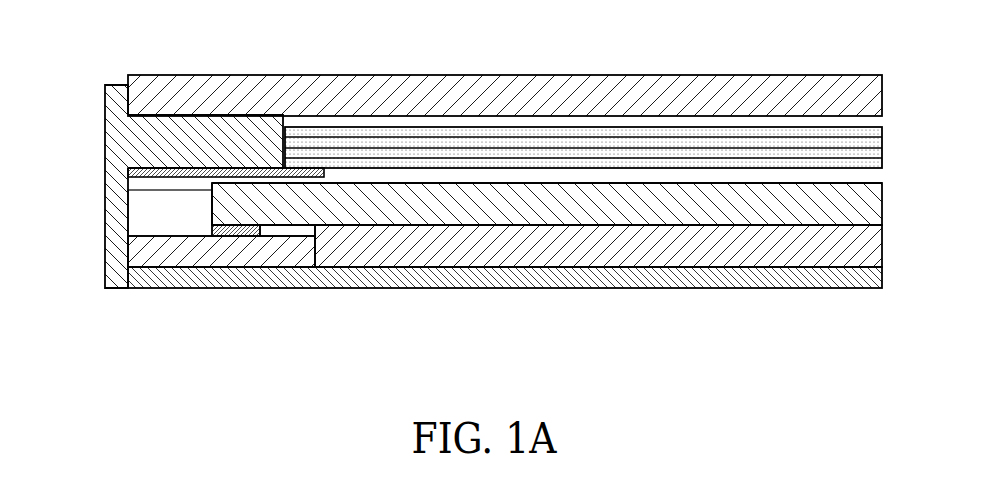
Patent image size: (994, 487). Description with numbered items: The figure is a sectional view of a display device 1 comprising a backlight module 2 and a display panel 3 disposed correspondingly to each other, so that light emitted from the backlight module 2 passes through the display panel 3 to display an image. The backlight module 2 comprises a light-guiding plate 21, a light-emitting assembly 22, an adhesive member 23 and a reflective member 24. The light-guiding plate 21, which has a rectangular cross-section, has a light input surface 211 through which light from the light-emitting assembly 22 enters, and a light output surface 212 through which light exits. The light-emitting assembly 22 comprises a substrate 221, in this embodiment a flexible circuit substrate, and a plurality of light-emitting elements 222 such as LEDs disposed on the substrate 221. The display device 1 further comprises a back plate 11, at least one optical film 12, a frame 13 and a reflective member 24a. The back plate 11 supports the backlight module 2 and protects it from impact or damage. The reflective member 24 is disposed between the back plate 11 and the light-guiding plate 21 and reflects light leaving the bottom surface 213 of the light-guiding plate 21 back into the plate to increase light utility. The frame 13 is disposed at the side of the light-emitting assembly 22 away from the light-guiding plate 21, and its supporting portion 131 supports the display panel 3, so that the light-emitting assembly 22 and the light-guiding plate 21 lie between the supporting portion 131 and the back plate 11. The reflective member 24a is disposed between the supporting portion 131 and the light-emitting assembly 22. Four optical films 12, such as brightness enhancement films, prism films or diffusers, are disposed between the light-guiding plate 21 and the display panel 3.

The display device 1 is at (190, 46).
The display panel 3 is at (868, 97).
The frame 13 is at (178, 163).
The supporting portion 131 is at (207, 135).
The optical film 12 is at (885, 127).
The backlight module 2 is at (874, 198).
The reflective member 24a is at (146, 172).
The light-guiding plate 21 is at (558, 182).
The light output surface 212 is at (674, 183).
The bottom surface 213 is at (645, 226).
The light input surface 211 is at (212, 208).
The adhesive member 23 is at (238, 233).
The reflective member 24 is at (870, 251).
The light-emitting assembly 22 is at (165, 228).
The light-emitting elements 222 is at (138, 218).
The substrate 221 is at (138, 256).
The back plate 11 is at (520, 279).